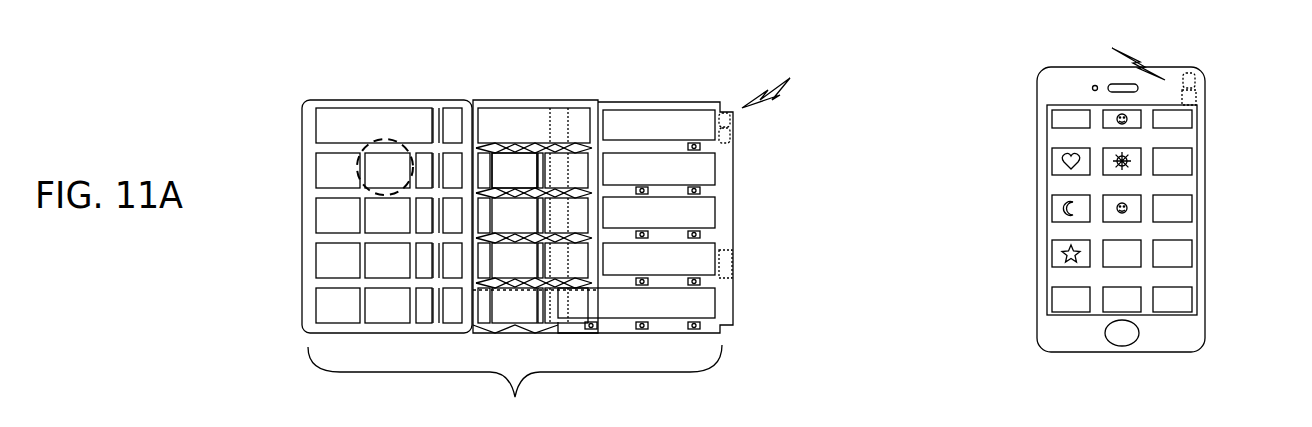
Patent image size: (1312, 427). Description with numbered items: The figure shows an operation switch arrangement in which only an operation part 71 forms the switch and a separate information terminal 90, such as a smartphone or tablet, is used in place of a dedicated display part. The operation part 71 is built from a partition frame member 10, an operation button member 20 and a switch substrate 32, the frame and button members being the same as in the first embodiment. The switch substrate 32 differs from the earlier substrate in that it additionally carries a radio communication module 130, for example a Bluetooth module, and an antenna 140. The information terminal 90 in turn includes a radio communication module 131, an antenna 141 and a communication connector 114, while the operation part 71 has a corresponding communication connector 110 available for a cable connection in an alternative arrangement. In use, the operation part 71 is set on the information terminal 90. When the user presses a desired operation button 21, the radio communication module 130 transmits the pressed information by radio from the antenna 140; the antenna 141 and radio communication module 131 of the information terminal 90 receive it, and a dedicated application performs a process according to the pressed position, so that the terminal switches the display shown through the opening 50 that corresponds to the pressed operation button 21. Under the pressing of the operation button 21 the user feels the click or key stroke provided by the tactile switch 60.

The partition frame member 10 is at (388, 105).
The operation button member 20 is at (528, 100).
The operation button 21 is at (528, 138).
The switch substrate 32 is at (695, 108).
The opening 50 is at (355, 160).
The tactile switch 60 is at (705, 290).
The operation part 71 is at (515, 386).
The information terminal 90 is at (1053, 88).
The communication connector 110 is at (732, 257).
The communication connector 114 is at (1120, 348).
The radio communication module 130 is at (732, 140).
The radio communication module 131 is at (1192, 100).
The antenna 140 is at (723, 120).
The antenna 141 is at (1192, 82).